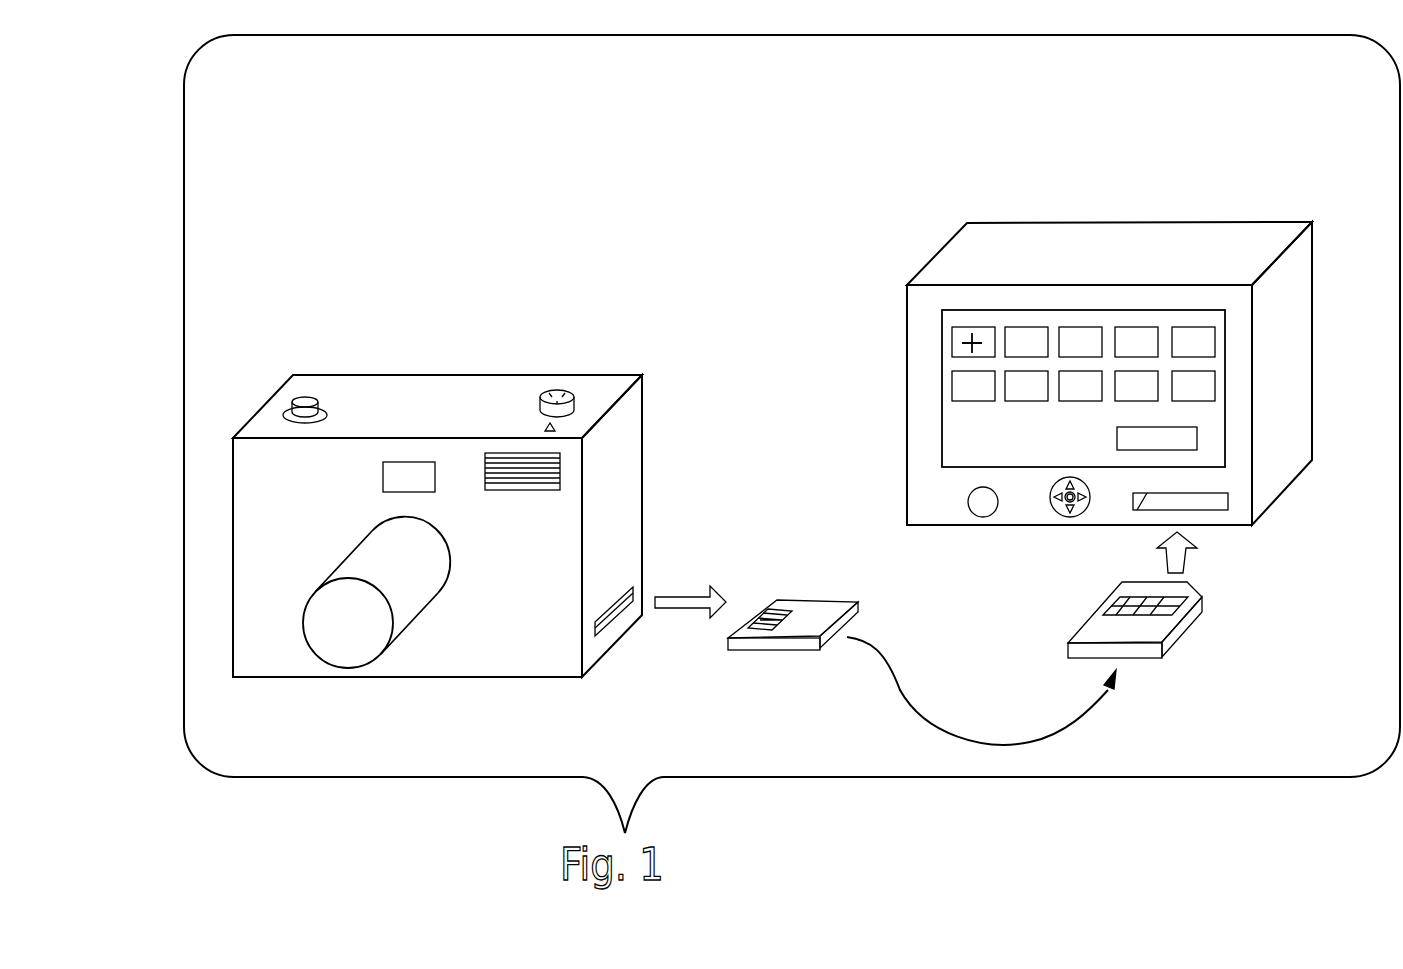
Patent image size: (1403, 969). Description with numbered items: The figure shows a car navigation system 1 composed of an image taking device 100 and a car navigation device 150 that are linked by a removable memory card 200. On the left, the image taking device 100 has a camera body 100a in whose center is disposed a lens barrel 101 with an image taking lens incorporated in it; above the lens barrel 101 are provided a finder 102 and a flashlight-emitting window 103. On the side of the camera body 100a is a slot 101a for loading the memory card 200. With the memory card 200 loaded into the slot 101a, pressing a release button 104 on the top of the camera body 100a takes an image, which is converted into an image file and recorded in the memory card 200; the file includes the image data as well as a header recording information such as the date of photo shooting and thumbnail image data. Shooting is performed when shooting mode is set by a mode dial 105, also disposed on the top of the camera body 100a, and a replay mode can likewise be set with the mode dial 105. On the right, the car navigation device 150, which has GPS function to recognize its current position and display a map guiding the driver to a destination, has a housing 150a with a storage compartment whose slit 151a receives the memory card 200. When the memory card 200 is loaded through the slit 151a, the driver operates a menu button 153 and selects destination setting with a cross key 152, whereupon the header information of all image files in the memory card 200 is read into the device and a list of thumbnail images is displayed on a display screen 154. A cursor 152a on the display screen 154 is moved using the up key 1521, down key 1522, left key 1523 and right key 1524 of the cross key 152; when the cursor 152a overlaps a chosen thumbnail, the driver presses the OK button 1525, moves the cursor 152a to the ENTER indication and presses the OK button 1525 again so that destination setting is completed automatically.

The car navigation system 1 is at (668, 124).
The image taking device 100 is at (479, 481).
The camera body 100a is at (630, 477).
The lens barrel 101 is at (415, 593).
The slot 101a is at (615, 613).
The finder 102 is at (420, 489).
The flashlight-emitting window 103 is at (522, 480).
The release button 104 is at (305, 400).
The mode dial 105 is at (557, 395).
The car navigation device 150 is at (1095, 353).
The display apparatus body 150a is at (1287, 330).
The slit 151a is at (1205, 507).
The cross key 152 is at (1075, 496).
The up key 1521 is at (1068, 485).
The down key 1522 is at (1070, 512).
The left key 1523 is at (1053, 500).
The right key 1524 is at (1086, 505).
The OK button 1525 is at (1086, 494).
The cursor 152a is at (952, 348).
The menu button 153 is at (983, 510).
The display screen 154 is at (1108, 318).
The memory card 200 is at (797, 642).